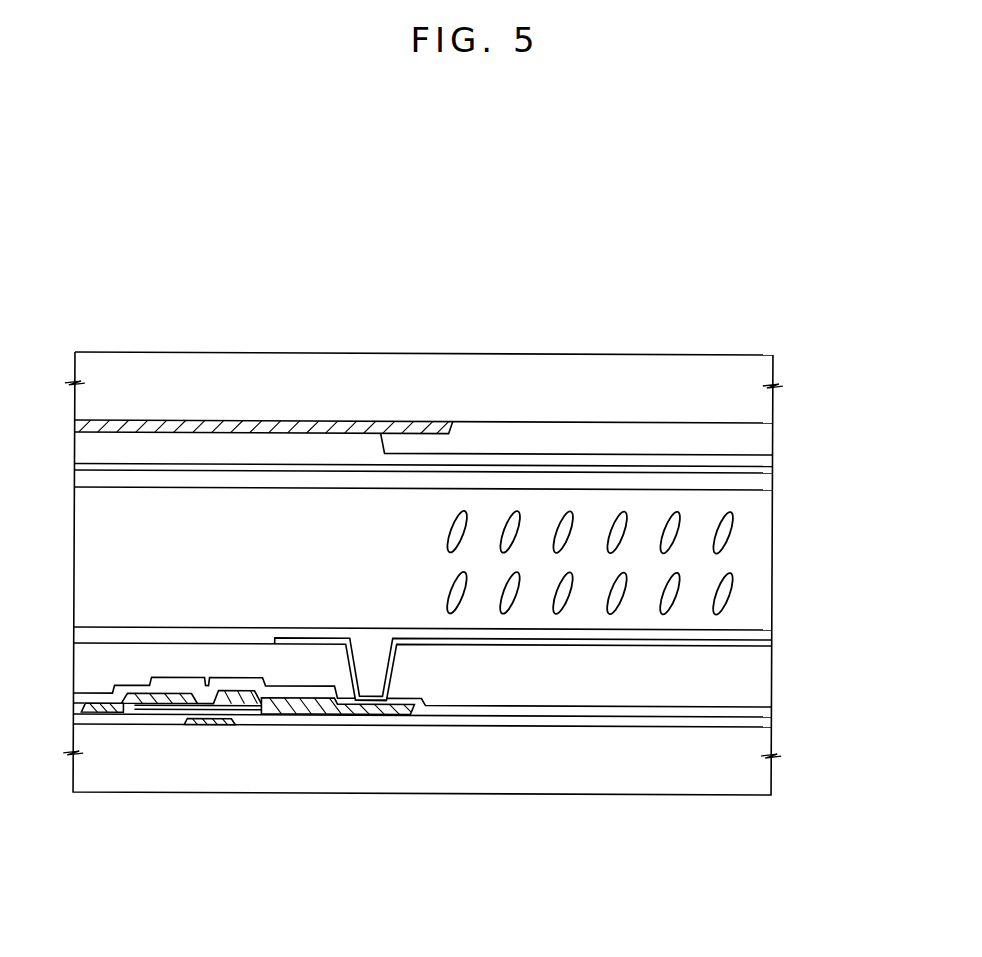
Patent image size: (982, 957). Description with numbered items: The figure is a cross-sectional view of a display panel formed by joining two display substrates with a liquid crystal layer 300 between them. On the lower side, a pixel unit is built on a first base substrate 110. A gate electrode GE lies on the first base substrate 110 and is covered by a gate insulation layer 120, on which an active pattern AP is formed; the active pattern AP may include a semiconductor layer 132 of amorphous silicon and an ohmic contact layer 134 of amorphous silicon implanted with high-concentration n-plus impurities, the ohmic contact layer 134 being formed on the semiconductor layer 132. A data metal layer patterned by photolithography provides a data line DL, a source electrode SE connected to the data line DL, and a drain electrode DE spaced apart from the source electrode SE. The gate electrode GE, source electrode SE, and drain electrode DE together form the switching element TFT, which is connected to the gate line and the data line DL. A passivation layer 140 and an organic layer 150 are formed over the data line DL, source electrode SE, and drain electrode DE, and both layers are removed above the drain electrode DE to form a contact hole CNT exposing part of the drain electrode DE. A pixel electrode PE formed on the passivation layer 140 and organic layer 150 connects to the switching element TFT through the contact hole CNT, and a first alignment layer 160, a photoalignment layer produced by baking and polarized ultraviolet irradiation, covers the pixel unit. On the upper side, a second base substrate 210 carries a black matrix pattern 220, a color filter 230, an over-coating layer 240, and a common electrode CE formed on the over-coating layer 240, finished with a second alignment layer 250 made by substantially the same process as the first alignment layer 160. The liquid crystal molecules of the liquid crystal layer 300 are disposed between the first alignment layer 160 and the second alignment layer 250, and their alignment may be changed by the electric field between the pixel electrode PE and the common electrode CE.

The first base substrate 110 is at (772, 747).
The gate insulation layer 120 is at (772, 717).
The passivation layer 140 is at (772, 707).
The organic layer 150 is at (772, 675).
The first alignment layer 160 is at (772, 629).
The second base substrate 210 is at (215, 386).
The black matrix pattern 220 is at (316, 428).
The color filter 230 is at (428, 443).
The over-coating layer 240 is at (500, 462).
The second alignment layer 250 is at (635, 483).
The liquid crystal layer 300 is at (781, 490).
The common electrode CE is at (568, 470).
The pixel electrode PE is at (772, 644).
The data line DL is at (100, 706).
The source electrode SE is at (150, 697).
The gate electrode GE is at (208, 724).
The drain electrode DE is at (257, 700).
The active pattern AP is at (252, 790).
The semiconductor layer 132 is at (265, 706).
The ohmic contact layer 134 is at (283, 710).
The contact hole CNT is at (367, 690).
The switching element TFT is at (148, 890).